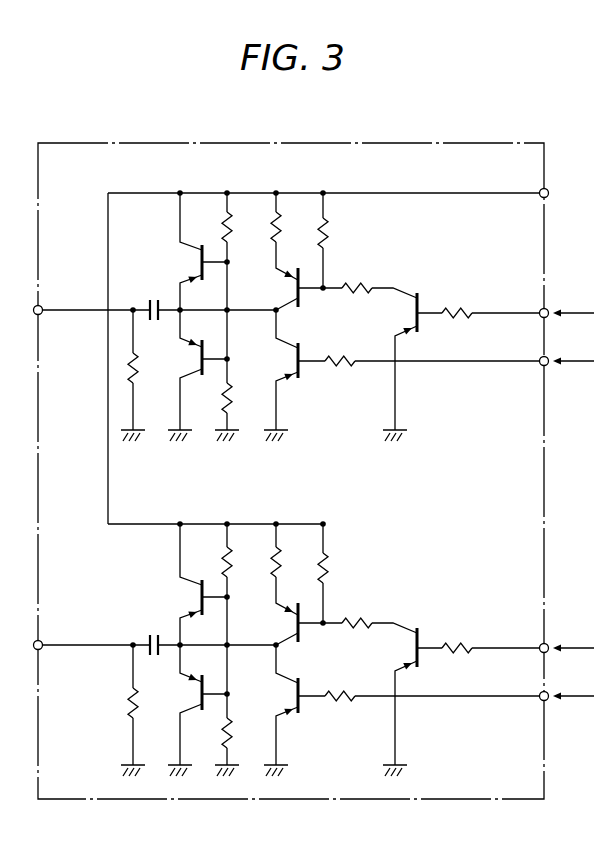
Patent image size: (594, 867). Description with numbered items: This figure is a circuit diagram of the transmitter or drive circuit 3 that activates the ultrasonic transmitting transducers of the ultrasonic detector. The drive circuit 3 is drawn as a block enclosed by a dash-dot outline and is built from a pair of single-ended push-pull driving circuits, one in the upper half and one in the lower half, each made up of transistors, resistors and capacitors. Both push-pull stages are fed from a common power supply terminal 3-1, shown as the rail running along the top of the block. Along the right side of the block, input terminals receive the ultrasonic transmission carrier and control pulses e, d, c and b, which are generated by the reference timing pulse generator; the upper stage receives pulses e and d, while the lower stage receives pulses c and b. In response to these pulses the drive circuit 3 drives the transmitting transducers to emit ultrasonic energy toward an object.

The drive circuit 3 is at (440, 143).
The power supply terminal 3-1 is at (460, 193).
The ultrasonic transmission carrier pulse e is at (571, 311).
The ultrasonic transmission carrier pulse d is at (572, 364).
The ultrasonic transmission carrier pulse c is at (569, 646).
The ultrasonic transmission carrier pulse b is at (572, 699).